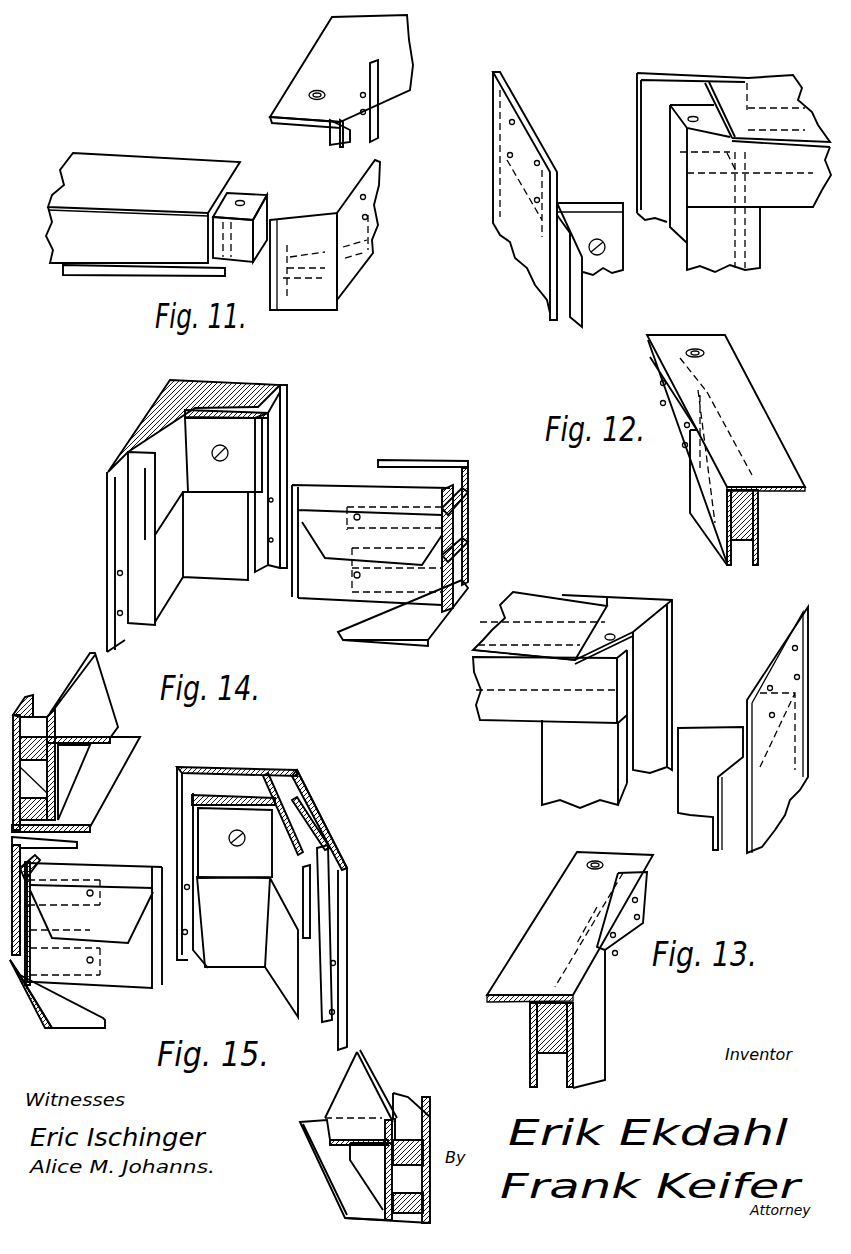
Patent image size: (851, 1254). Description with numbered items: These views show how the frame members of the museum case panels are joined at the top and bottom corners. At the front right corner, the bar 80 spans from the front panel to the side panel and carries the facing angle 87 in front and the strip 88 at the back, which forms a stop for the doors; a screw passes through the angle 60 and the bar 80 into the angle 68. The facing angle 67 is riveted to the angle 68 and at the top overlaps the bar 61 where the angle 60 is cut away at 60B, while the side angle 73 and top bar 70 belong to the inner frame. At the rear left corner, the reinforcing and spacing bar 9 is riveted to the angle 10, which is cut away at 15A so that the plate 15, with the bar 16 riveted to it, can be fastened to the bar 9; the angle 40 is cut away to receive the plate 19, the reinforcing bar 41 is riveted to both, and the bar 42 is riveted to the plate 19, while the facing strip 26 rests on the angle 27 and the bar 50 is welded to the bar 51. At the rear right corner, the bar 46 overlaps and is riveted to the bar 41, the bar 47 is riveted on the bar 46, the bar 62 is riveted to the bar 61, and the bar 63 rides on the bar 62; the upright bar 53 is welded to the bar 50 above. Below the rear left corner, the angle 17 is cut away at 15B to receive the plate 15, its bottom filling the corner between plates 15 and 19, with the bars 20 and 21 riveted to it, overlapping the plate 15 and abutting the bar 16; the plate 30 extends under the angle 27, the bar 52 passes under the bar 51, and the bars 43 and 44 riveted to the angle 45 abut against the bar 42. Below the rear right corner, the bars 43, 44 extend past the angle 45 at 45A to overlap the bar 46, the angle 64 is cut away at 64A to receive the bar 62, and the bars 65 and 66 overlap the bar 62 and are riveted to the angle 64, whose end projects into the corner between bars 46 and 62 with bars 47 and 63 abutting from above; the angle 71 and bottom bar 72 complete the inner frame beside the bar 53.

In FIG. 12, the reinforcing and spacing bar 9 is at (658, 387).
In FIG. 12, the angle 10 is at (763, 420).
In FIG. 12, the plate 15 is at (527, 122).
In FIG. 14, the plate 15 is at (140, 425).
In FIG. 12, the cut-away portion of angle 15A is at (688, 463).
In FIG. 15, the cut-away portion of angle 15B is at (33, 707).
In FIG. 12, the bar 16 is at (562, 217).
In FIG. 14, the bar 16 is at (128, 482).
In FIG. 15, the angle 17 is at (25, 695).
In FIG. 12, the plate 19 is at (648, 80).
In FIG. 14, the plate 19 is at (285, 395).
In FIG. 15, the bar 20 is at (48, 712).
In FIG. 15, the bar 21 is at (90, 745).
In FIG. 12, the facing strip 26 is at (760, 550).
In FIG. 12, the angle 27 is at (593, 237).
In FIG. 14, the angle 27 is at (175, 540).
In FIG. 15, the plate 30 is at (95, 667).
In FIG. 12, the angle 40 is at (768, 88).
In FIG. 13, the angle 40 is at (532, 602).
In FIG. 12, the reinforcing bar 41 is at (694, 115).
In FIG. 13, the reinforcing bar 41 is at (615, 634).
In FIG. 12, the bar 42 is at (675, 235).
In FIG. 14, the bar 42 is at (240, 383).
In FIG. 14, the bar 43 is at (463, 505).
In FIG. 15, the bar 43 is at (28, 863).
In FIG. 14, the bar 44 is at (462, 572).
In FIG. 15, the bar 44 is at (37, 988).
In FIG. 14, the angle 45 is at (432, 450).
In FIG. 15, the angle 45 is at (30, 863).
In FIG. 15, the extension of bars beyond angle 45A is at (82, 862).
In FIG. 13, the bar 46 is at (665, 642).
In FIG. 15, the bar 46 is at (235, 795).
In FIG. 13, the bar 47 is at (635, 710).
In FIG. 15, the bar 47 is at (215, 795).
In FIG. 12, the bar 50 is at (800, 200).
In FIG. 13, the bar 50 is at (520, 710).
In FIG. 12, the bar 51 is at (757, 252).
In FIG. 14, the bar 51 is at (272, 430).
In FIG. 14, the bar 52 is at (318, 484).
In FIG. 15, the bar 52 is at (160, 862).
In FIG. 13, the upright bar 53 is at (548, 763).
In FIG. 15, the upright bar 53 is at (270, 773).
In FIG. 11, the angle 60 is at (398, 100).
In FIG. 13, the angle 60 is at (545, 912).
In FIG. 11, the cut-away portion of angle 60B is at (370, 62).
In FIG. 11, the reinforcing bar 61 is at (332, 136).
In FIG. 13, the reinforcing bar 61 is at (643, 895).
In FIG. 13, the bar 62 is at (793, 635).
In FIG. 15, the bar 62 is at (345, 885).
In FIG. 13, the bar 63 is at (740, 745).
In FIG. 15, the bar 63 is at (318, 865).
In FIG. 15, the angle 64 is at (303, 1130).
In FIG. 13, the cut-away portion of angle 64A is at (606, 975).
In FIG. 15, the cut-away portion of angle 64A is at (410, 1095).
In FIG. 15, the bar 65 is at (385, 1195).
In FIG. 15, the bar 66 is at (425, 1150).
In FIG. 11, the facing angle 67 is at (371, 213).
In FIG. 11, the angle 68 is at (307, 250).
In FIG. 11, the top bar 70 is at (338, 143).
In FIG. 13, the top bar 70 is at (530, 1027).
In FIG. 15, the angle 71 is at (275, 865).
In FIG. 15, the bottom bar 72 is at (370, 1068).
In FIG. 11, the side angle 73 is at (350, 260).
In FIG. 11, the bar 80 is at (259, 196).
In FIG. 11, the facing angle 87 is at (192, 168).
In FIG. 11, the strip 88 is at (157, 272).